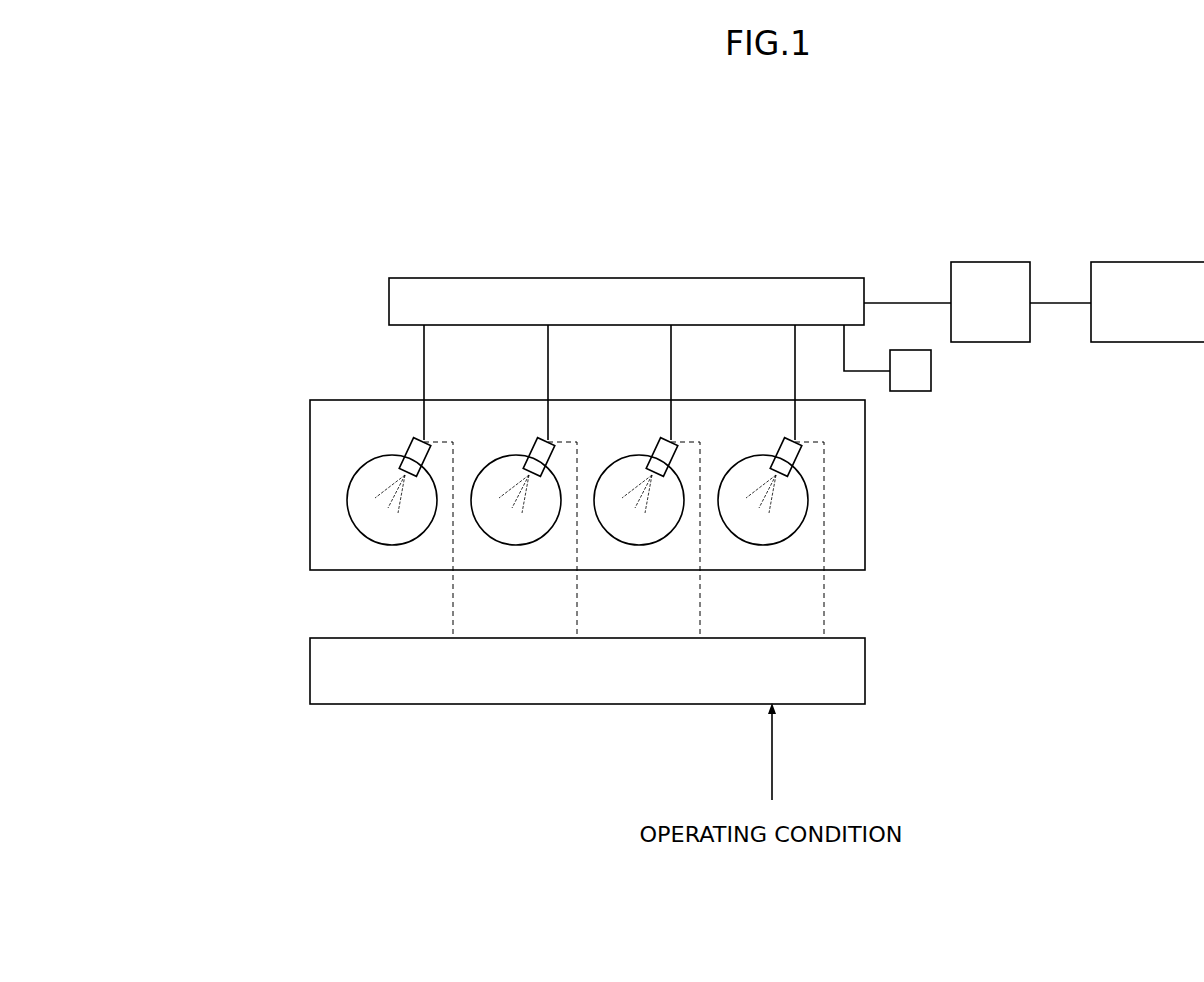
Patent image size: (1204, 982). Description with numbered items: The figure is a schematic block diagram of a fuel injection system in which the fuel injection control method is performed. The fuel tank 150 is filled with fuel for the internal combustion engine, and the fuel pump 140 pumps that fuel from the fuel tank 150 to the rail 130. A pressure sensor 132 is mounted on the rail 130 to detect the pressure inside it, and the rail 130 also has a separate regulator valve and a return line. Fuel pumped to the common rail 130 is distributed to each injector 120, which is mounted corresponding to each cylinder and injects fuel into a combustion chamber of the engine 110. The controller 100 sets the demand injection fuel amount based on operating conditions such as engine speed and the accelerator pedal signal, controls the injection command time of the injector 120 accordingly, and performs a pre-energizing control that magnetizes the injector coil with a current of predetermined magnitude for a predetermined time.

The controller 100 is at (310, 667).
The engine 110 is at (310, 480).
The injector 120 is at (407, 441).
The rail 130 is at (623, 278).
The pressure sensor 132 is at (914, 392).
The fuel pump 140 is at (988, 262).
The fuel tank 150 is at (1148, 262).